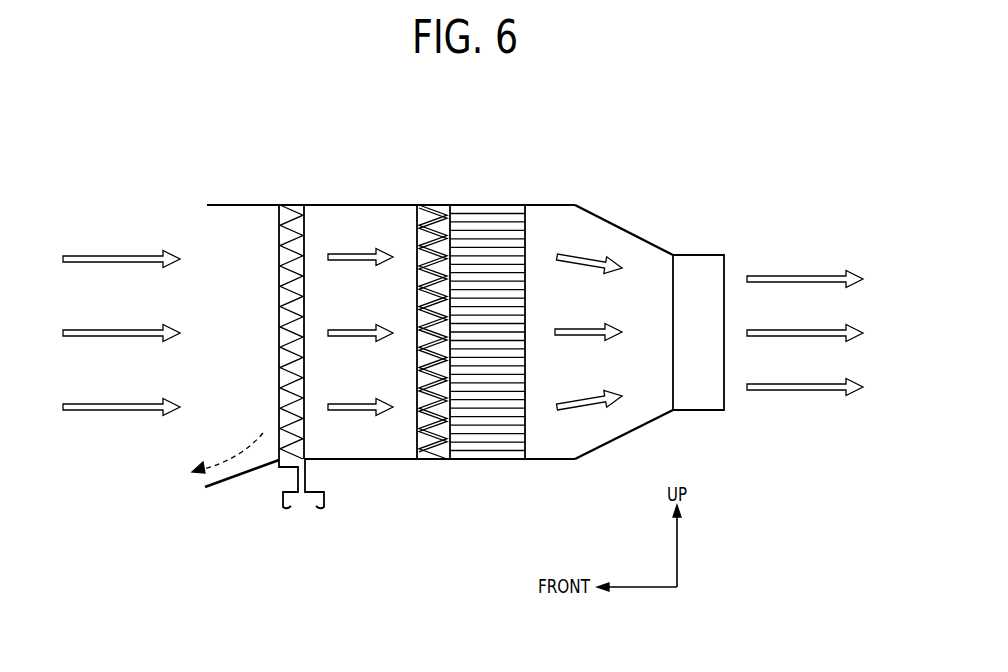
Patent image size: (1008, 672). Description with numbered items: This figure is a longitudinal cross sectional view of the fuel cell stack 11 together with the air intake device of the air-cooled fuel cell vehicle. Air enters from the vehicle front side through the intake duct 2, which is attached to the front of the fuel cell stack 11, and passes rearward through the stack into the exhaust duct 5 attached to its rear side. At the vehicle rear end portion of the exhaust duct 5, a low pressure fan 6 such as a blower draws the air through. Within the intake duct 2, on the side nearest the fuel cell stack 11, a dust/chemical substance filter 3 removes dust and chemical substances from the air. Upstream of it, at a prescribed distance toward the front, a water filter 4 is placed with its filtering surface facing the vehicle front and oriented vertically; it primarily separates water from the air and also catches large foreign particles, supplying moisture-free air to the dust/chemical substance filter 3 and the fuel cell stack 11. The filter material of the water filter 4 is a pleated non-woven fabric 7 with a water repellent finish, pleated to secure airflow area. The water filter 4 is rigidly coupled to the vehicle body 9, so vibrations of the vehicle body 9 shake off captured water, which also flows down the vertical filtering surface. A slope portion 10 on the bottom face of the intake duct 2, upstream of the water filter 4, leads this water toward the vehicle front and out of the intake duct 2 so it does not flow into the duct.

The intake duct 2 is at (354, 205).
The dust/chemical substance filter 3 is at (413, 220).
The water filter 4 is at (303, 230).
The exhaust duct 5 is at (625, 228).
The low pressure fan 6 is at (700, 252).
The non-woven fabric 7 is at (288, 202).
The vehicle body 9 is at (313, 490).
The slope portion 10 is at (235, 477).
The fuel cell stack 11 is at (485, 205).